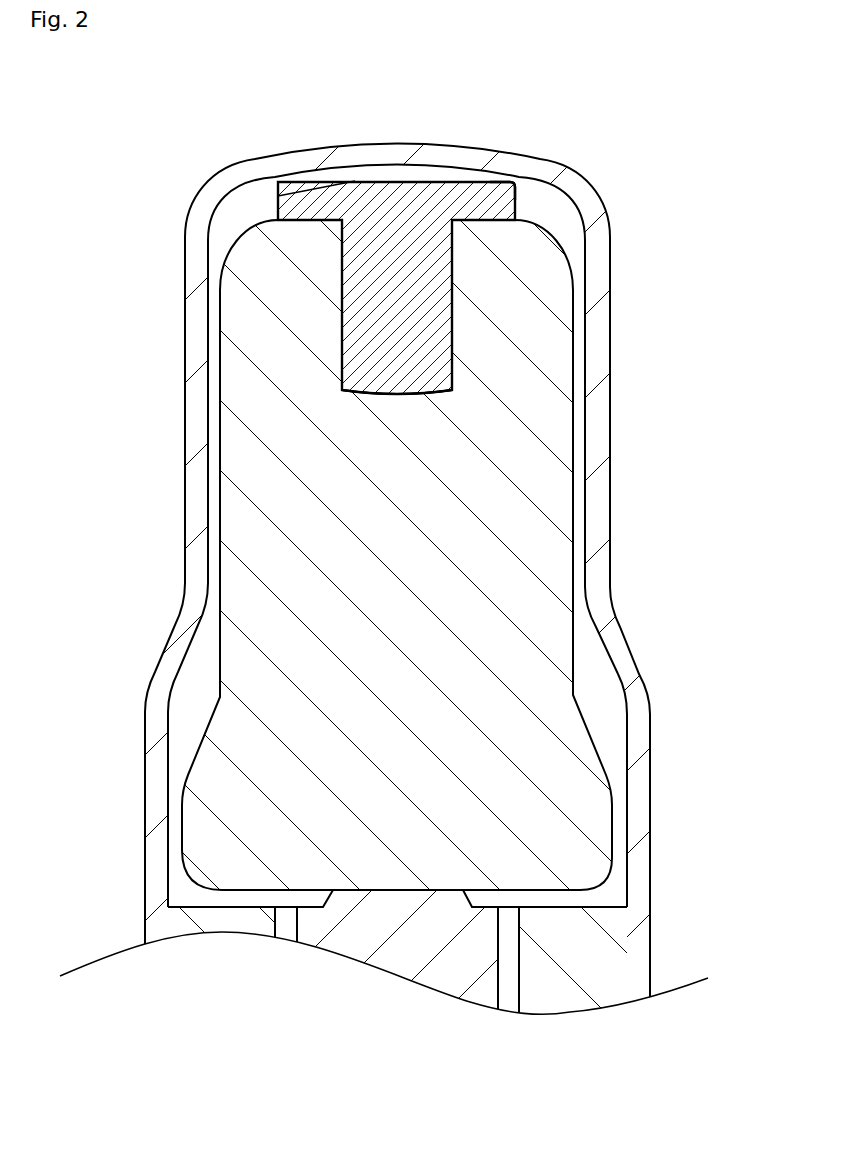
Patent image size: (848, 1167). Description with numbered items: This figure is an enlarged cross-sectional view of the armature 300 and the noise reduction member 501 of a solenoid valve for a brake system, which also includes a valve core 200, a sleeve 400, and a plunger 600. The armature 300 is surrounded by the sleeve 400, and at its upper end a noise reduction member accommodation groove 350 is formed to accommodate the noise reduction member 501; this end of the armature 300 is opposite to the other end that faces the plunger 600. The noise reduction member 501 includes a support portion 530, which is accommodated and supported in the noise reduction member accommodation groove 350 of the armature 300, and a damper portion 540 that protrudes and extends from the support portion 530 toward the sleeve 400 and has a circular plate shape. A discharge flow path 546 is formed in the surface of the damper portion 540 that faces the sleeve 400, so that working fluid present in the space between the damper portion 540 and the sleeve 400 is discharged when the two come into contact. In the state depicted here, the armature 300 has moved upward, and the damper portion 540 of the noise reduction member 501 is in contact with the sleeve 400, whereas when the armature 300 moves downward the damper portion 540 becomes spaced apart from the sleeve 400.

The valve core 200 is at (222, 930).
The armature 300 is at (572, 438).
The noise reduction member accommodation groove 350 is at (433, 341).
The sleeve 400 is at (612, 526).
The noise reduction member 501 is at (512, 175).
The support portion 530 is at (407, 283).
The damper portion 540 is at (397, 207).
The discharge flow path 546 is at (300, 188).
The plunger 600 is at (400, 977).